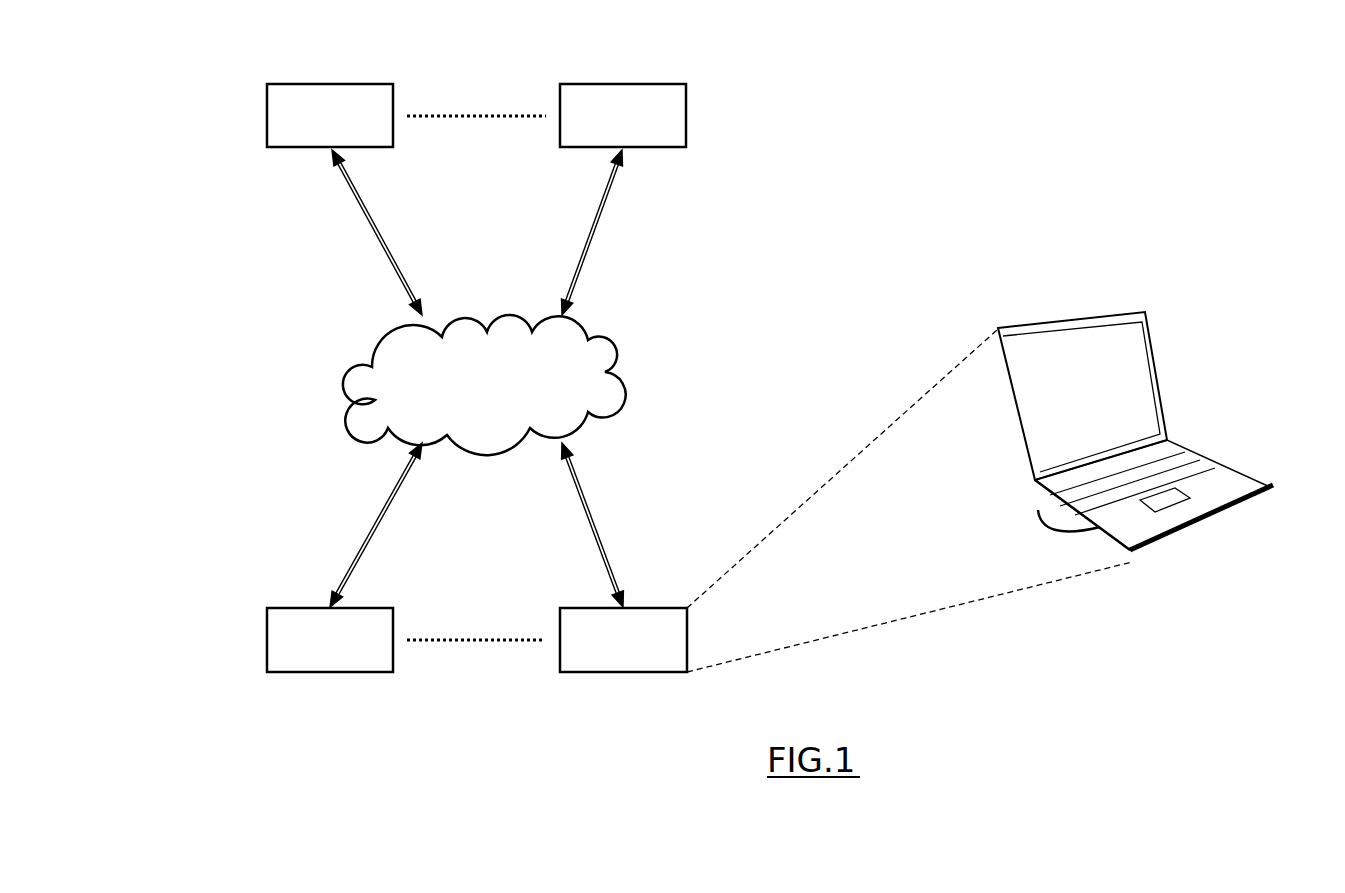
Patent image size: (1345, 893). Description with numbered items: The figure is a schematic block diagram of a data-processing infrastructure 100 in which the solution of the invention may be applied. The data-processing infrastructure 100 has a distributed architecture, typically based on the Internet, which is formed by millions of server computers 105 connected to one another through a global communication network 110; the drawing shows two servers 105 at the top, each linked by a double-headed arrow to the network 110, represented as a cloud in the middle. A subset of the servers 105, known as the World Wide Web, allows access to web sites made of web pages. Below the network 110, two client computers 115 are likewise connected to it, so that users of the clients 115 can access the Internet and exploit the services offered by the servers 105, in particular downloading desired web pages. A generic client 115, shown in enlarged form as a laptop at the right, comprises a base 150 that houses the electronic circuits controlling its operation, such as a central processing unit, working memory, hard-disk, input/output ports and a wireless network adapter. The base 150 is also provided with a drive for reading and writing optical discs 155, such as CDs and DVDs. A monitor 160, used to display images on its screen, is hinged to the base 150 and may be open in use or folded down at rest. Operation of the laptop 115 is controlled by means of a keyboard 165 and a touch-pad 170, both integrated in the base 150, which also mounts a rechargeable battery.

The data-processing infrastructure 100 is at (968, 154).
The server computer 105 is at (489, 95).
The global communication network 110 is at (526, 380).
The client computer 115 is at (472, 661).
The base 150 is at (1146, 431).
The drive for reading/writing optical discs 155 is at (1038, 510).
The monitor 160 is at (1116, 396).
The keyboard 165 is at (1166, 464).
The touch-pad 170 is at (1211, 516).